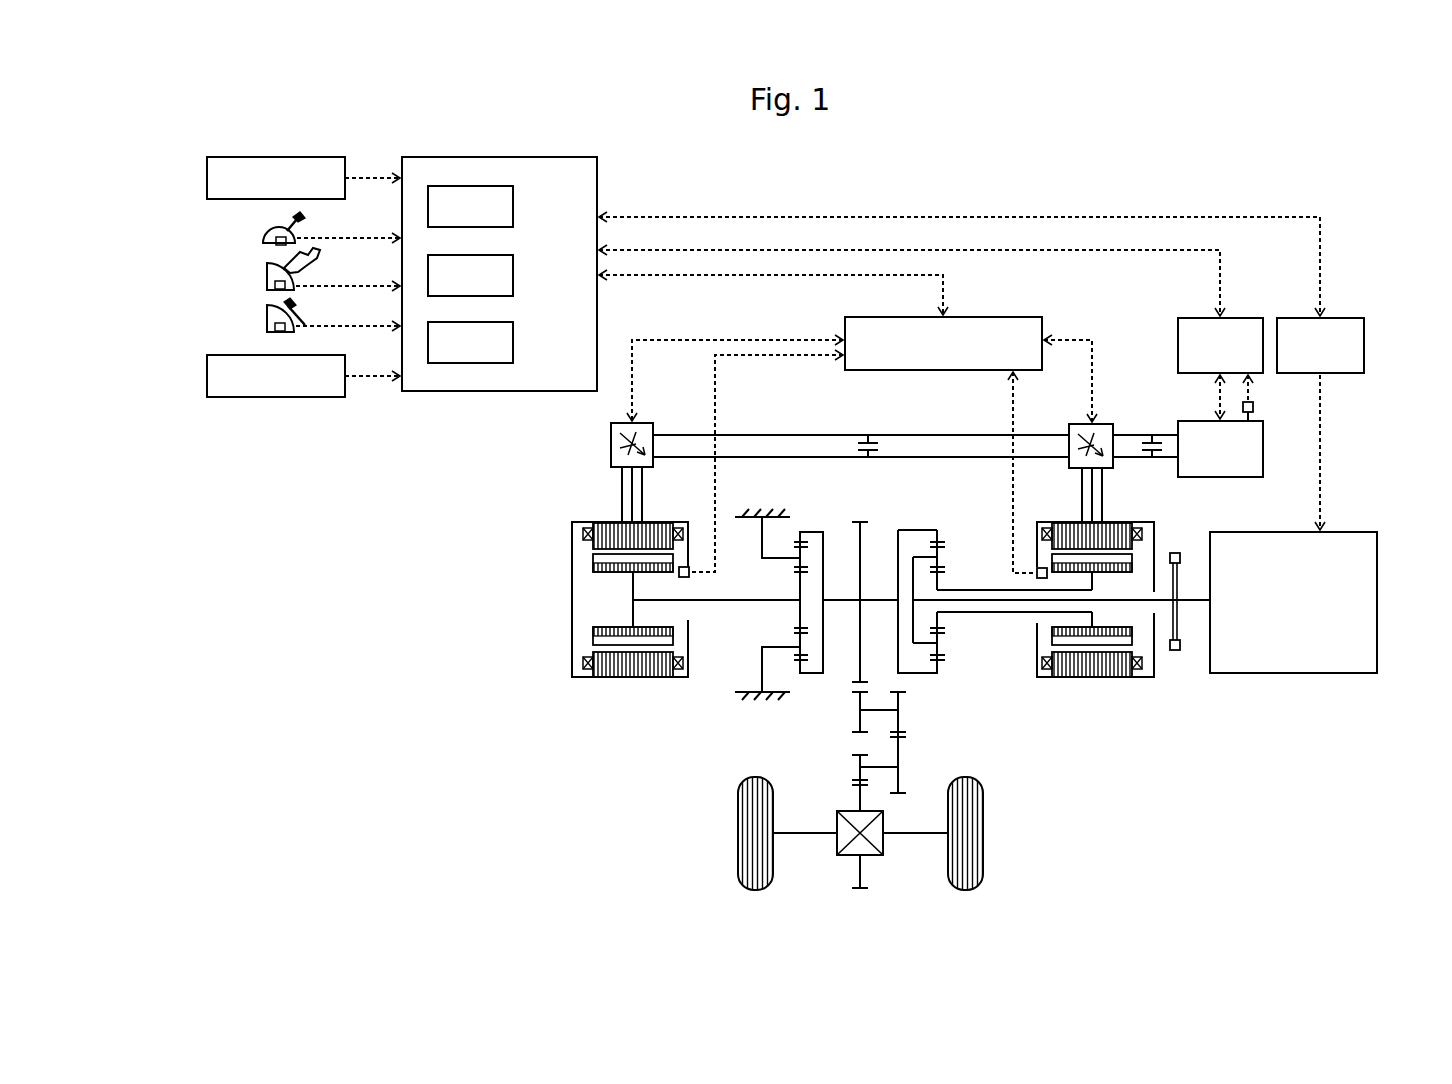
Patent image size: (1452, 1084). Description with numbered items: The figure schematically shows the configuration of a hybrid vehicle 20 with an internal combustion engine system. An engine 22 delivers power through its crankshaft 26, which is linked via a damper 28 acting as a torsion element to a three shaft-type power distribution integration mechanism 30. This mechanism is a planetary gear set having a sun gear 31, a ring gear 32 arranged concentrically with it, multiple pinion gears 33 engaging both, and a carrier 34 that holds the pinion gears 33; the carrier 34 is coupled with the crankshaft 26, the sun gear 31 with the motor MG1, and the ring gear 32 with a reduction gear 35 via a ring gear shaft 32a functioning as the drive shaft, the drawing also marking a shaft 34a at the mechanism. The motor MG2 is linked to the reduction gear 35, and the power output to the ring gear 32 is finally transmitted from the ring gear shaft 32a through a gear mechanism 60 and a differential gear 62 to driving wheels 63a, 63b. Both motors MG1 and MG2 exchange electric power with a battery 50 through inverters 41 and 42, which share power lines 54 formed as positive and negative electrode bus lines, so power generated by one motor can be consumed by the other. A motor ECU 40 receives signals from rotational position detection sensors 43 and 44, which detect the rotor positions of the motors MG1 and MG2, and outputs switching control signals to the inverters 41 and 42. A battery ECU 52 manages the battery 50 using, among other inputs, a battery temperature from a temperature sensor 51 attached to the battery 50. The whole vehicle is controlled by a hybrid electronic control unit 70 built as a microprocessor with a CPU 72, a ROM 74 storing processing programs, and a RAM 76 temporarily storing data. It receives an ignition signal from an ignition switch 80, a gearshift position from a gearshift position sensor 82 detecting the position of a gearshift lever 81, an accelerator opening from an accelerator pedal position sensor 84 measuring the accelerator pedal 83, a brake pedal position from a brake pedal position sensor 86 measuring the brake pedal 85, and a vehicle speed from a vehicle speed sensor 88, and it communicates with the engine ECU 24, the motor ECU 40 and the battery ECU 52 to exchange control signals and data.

The hybrid vehicle 20 is at (1122, 190).
The engine 22 is at (1377, 588).
The engine electronic control unit 24 is at (1340, 318).
The crankshaft 26 is at (1192, 603).
The damper 28 is at (1182, 655).
The power distribution integration mechanism 30 is at (995, 586).
The sun gear 31 is at (940, 615).
The ring gear 32 is at (940, 670).
The ring gear shaft 32a is at (845, 600).
The pinion gears 33 is at (940, 643).
The carrier 34 is at (905, 562).
The carrier shaft 34a is at (970, 598).
The reduction gear 35 is at (801, 512).
The motor electronic control unit 40 is at (985, 317).
The inverter 41 is at (1105, 421).
The inverter 42 is at (646, 421).
The rotational position detection sensor 43 is at (1038, 565).
The rotational position detection sensor 44 is at (685, 565).
The battery 50 is at (1220, 477).
The temperature sensor 51 is at (1255, 407).
The battery electronic control unit 52 is at (1178, 322).
The power lines 54 is at (925, 457).
The gear mechanism 60 is at (944, 750).
The differential gear 62 is at (884, 850).
The driving wheel 63a is at (735, 868).
The driving wheel 63b is at (988, 868).
The hybrid electronic control unit 70 is at (500, 157).
The CPU 72 is at (513, 206).
The ROM 74 is at (513, 275).
The RAM 76 is at (513, 343).
The ignition switch 80 is at (207, 172).
The gearshift lever 81 is at (296, 221).
The gearshift position sensor 82 is at (265, 240).
The accelerator pedal 83 is at (298, 262).
The accelerator pedal position sensor 84 is at (270, 288).
The brake pedal 85 is at (296, 306).
The brake pedal position sensor 86 is at (268, 328).
The vehicle speed sensor 88 is at (207, 372).
The motor MG1 is at (1122, 680).
The motor MG2 is at (608, 520).